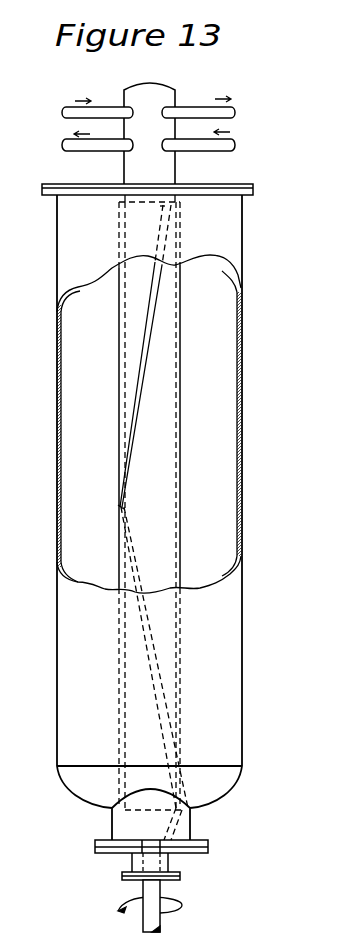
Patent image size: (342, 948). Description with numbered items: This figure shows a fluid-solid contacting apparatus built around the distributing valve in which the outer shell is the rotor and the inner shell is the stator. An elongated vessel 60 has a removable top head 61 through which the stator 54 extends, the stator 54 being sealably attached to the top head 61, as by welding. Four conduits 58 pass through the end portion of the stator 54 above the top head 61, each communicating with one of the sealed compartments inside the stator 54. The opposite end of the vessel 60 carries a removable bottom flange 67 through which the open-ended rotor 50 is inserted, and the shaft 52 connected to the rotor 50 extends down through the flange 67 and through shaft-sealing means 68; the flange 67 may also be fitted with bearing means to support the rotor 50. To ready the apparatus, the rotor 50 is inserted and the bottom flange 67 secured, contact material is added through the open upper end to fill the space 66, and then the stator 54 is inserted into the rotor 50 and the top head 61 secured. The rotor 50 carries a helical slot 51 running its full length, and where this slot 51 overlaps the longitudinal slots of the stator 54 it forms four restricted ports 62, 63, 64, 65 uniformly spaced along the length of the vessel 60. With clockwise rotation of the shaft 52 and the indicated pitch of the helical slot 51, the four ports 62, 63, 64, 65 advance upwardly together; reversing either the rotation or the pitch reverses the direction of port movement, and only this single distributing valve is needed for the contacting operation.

The rotor member 50 is at (119, 380).
The helical slot 51 is at (132, 438).
The shaft 52 is at (160, 923).
The stator 54 is at (166, 157).
The conduits 58 is at (68, 139).
The vessel 60 is at (57, 404).
The top head 61 is at (66, 185).
The restricted port 62 is at (150, 318).
The restricted port 63 is at (119, 508).
The restricted port 64 is at (150, 642).
The restricted port 65 is at (184, 812).
The space 66 is at (222, 482).
The bottom flange 67 is at (115, 853).
The shaft-sealing means 68 is at (170, 860).